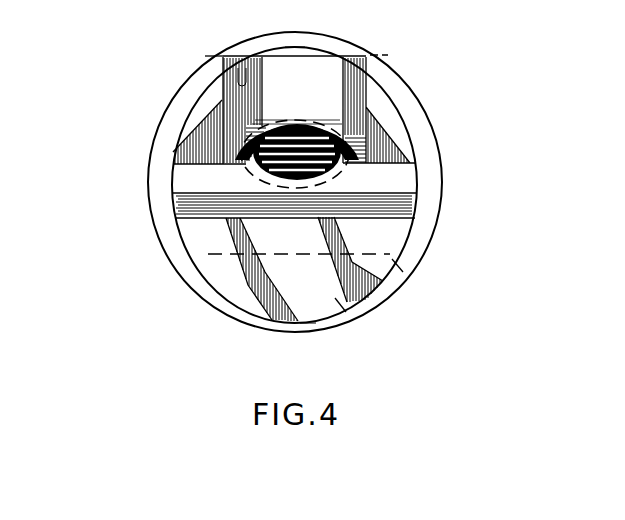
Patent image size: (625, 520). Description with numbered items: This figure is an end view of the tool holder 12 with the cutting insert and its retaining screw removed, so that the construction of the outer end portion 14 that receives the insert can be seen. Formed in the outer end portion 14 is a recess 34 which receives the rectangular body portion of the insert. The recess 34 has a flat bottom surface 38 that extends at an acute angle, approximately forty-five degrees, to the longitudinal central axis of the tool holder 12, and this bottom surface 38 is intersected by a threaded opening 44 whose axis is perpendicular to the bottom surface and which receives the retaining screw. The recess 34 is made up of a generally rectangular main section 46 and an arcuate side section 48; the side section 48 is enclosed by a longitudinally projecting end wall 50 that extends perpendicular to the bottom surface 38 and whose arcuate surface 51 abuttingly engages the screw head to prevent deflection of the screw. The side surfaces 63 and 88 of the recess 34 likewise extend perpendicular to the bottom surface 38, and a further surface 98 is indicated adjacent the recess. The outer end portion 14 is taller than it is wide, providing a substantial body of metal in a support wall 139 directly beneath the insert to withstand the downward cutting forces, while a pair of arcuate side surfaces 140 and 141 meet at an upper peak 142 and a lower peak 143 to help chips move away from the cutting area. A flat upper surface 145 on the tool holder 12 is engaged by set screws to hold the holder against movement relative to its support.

The tool holder 12 is at (444, 185).
The outer end portion 14 is at (158, 166).
The recess 34 is at (406, 181).
The flat bottom surface 38 is at (403, 200).
The threaded opening 44 is at (333, 132).
The main section 46 is at (172, 196).
The arcuate side section 48 is at (294, 74).
The end wall 50 is at (322, 56).
The arcuate surface 51 is at (209, 60).
The side surface 63 is at (306, 214).
The side surface 88 is at (203, 111).
The wall portion 98 is at (183, 150).
The support wall 139 is at (340, 304).
The arcuate side surface 140 is at (238, 308).
The arcuate side surface 141 is at (397, 265).
The upper peak 142 is at (300, 48).
The lower peak 143 is at (308, 328).
The flat upper surface 145 is at (360, 57).